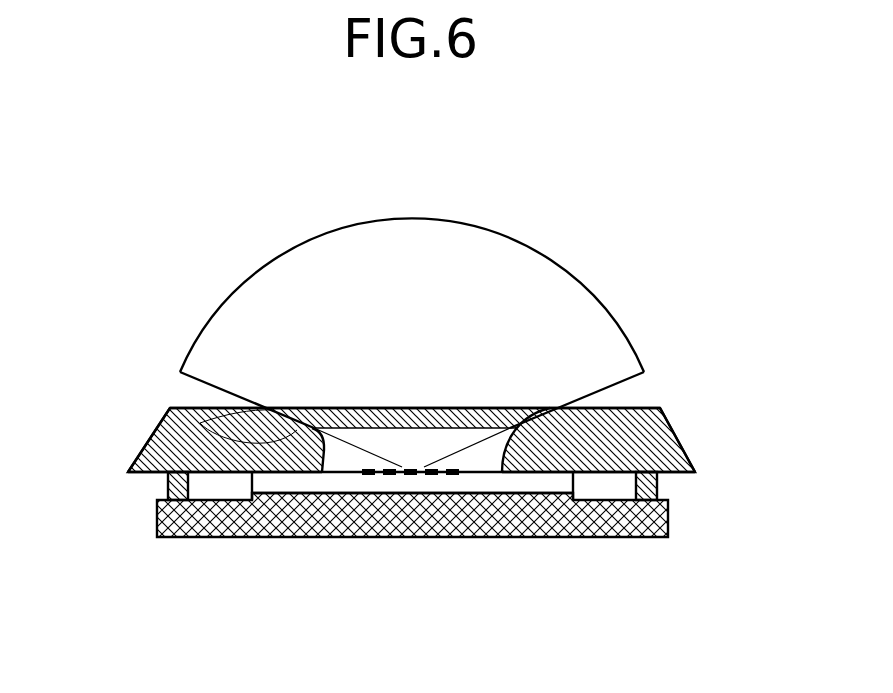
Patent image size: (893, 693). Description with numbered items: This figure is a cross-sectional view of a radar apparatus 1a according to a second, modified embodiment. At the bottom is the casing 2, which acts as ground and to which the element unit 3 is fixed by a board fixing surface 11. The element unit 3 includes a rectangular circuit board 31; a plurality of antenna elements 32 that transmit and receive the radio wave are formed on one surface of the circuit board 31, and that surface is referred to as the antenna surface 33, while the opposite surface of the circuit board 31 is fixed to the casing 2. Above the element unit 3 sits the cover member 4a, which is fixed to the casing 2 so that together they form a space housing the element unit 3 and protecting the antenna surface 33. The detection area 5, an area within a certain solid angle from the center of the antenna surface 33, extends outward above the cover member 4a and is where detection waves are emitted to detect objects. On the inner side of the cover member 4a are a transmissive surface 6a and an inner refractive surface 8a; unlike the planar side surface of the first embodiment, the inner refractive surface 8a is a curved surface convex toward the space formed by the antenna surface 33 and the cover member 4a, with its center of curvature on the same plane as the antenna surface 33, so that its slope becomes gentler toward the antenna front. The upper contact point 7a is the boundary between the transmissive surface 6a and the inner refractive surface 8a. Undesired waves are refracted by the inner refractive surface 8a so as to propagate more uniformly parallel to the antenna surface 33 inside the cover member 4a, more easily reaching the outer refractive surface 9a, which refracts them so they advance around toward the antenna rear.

The radar apparatus 1a is at (119, 181).
The casing 2 is at (652, 522).
The element unit 3 is at (612, 537).
The cover member 4a is at (670, 420).
The detection area 5 is at (407, 217).
The transmissive surface 6a is at (366, 432).
The upper contact point 7a is at (155, 411).
The inner refractive surface 8a is at (502, 432).
The outer refractive surface 9a is at (684, 445).
The board fixing surface 11 is at (263, 489).
The circuit board 31 is at (354, 483).
The antenna elements 32 is at (441, 487).
The antenna surface 33 is at (478, 468).